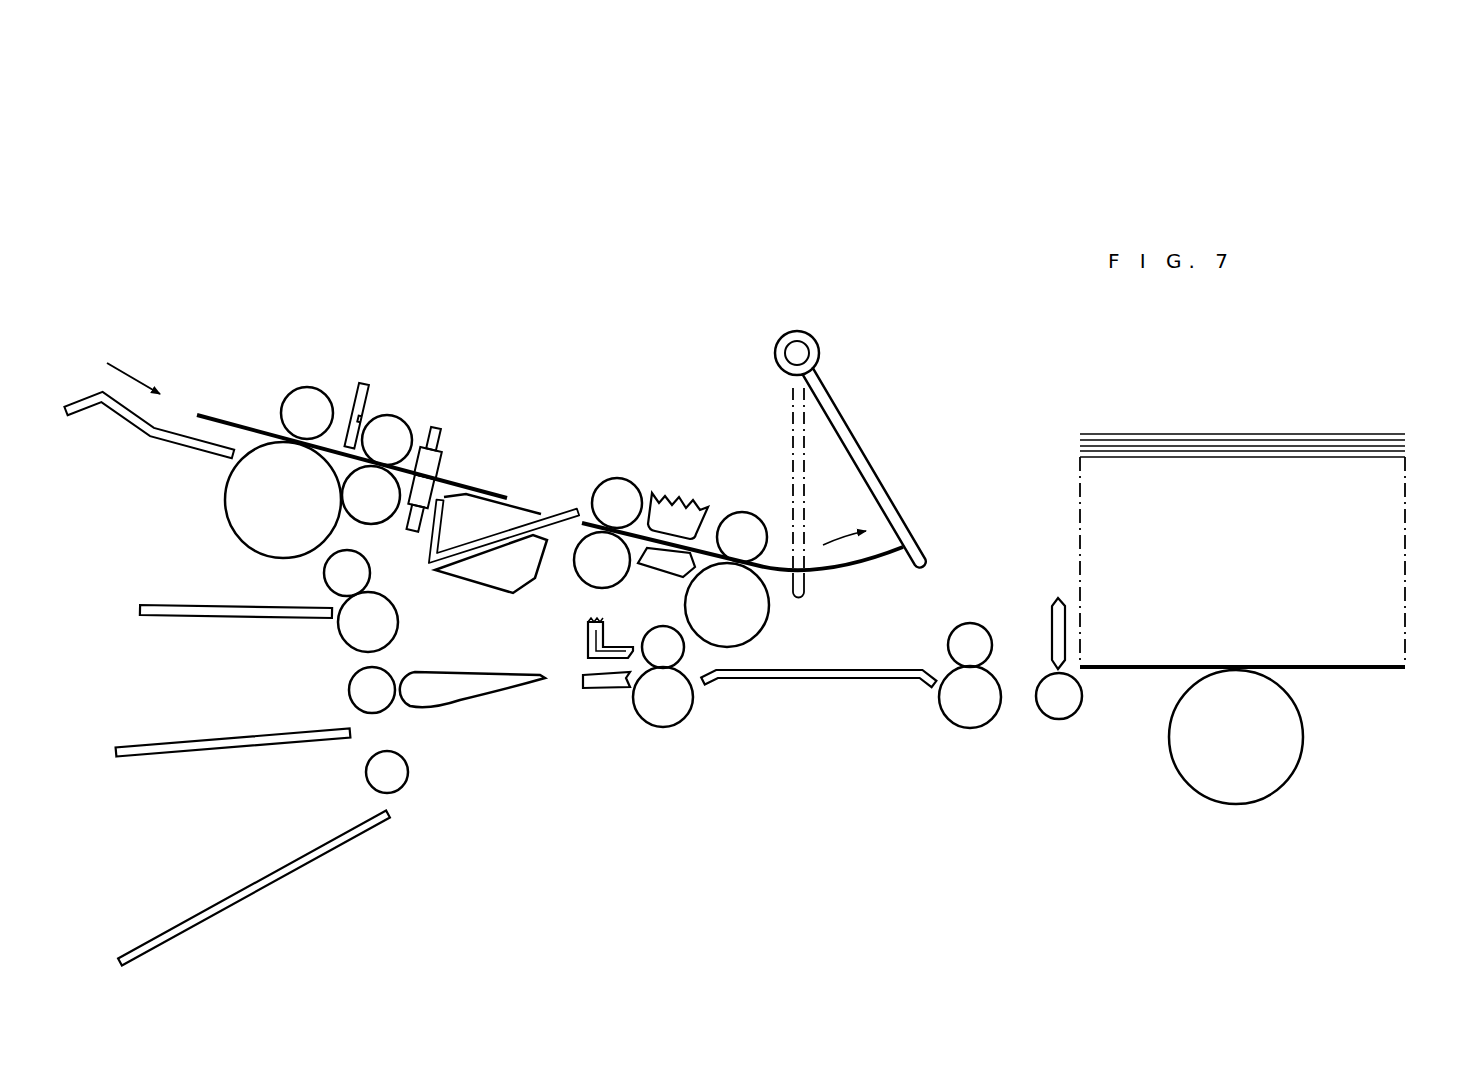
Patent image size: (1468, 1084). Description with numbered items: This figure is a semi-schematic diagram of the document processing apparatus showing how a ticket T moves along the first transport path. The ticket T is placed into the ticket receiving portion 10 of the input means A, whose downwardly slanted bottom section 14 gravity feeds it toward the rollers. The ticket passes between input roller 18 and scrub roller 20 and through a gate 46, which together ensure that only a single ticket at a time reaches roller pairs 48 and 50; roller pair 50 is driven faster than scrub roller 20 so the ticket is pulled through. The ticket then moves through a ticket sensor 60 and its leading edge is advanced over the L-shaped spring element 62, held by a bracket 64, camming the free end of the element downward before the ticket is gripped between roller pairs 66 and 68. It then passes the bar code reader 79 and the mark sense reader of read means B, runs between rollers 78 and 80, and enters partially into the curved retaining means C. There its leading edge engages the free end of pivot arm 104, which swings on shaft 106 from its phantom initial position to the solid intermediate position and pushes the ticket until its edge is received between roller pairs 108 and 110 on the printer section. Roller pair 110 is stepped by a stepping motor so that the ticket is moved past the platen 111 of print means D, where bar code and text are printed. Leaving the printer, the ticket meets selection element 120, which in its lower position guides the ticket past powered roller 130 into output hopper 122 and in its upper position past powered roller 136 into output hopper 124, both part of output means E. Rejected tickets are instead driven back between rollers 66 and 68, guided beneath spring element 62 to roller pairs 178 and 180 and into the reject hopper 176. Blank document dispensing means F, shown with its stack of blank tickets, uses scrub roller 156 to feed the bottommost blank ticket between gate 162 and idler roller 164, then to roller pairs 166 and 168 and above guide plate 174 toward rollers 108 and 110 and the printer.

The ticket receiving portion 10 is at (185, 383).
The bottom section 14 is at (133, 423).
The input roller 18 is at (305, 390).
The input scrub roller 20 is at (227, 520).
The gate 46 is at (368, 390).
The roller pair 48 is at (397, 417).
The roller pair 50 is at (365, 523).
The ticket sensor 60 is at (445, 457).
The spring element 62 is at (565, 512).
The bracket 64 is at (518, 510).
The roller pair 66 is at (638, 488).
The roller pair 68 is at (573, 563).
The roller 78 is at (748, 515).
The bar code reader 79 is at (648, 575).
The roller 80 is at (767, 623).
The pivot arm 104 is at (863, 448).
The shaft 106 is at (822, 353).
The roller pair 108 is at (653, 635).
The roller pair 110 is at (693, 707).
The platen 111 is at (593, 637).
The selection element 120 is at (462, 688).
The output hopper 122 is at (167, 740).
The output hopper 124 is at (277, 870).
The powered roller 130 is at (348, 687).
The powered roller 136 is at (412, 777).
The scrub roller 156 is at (1304, 753).
The gate 162 is at (1052, 610).
The idler roller 164 is at (1062, 721).
The roller pair 166 is at (975, 623).
The roller pair 168 is at (970, 727).
The guide plate 174 is at (825, 680).
The reject hopper 176 is at (173, 607).
The roller pair 178 is at (322, 573).
The roller pair 180 is at (402, 633).
The input means A is at (105, 350).
The read means B is at (687, 497).
The retaining means C is at (918, 523).
The print means D is at (611, 692).
The output means E is at (193, 795).
The blank document dispensing means F is at (1409, 519).
The ticket T is at (225, 411).